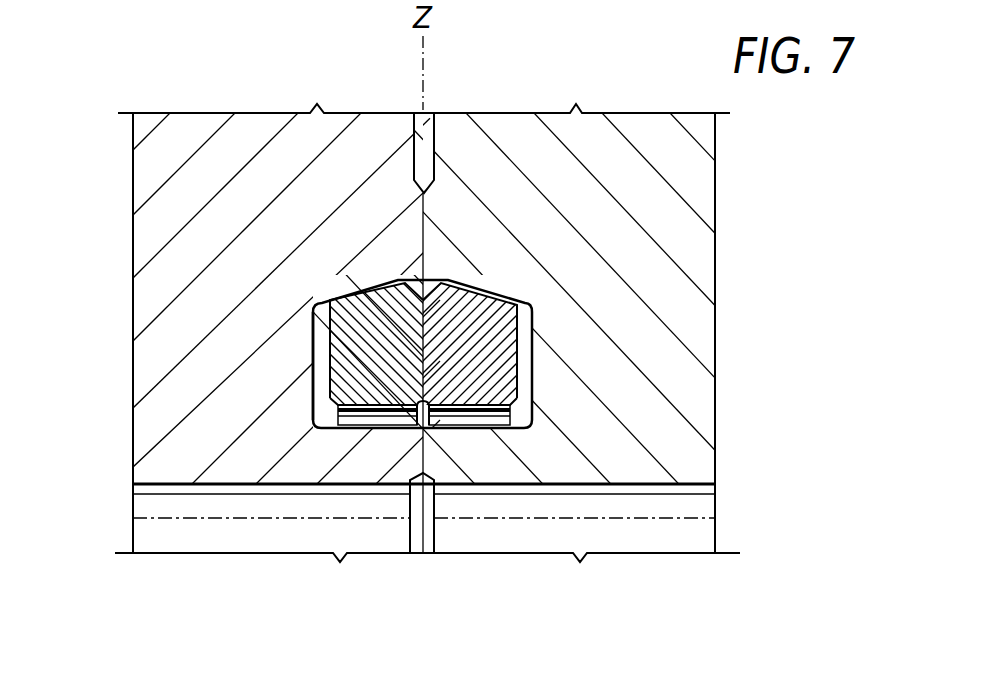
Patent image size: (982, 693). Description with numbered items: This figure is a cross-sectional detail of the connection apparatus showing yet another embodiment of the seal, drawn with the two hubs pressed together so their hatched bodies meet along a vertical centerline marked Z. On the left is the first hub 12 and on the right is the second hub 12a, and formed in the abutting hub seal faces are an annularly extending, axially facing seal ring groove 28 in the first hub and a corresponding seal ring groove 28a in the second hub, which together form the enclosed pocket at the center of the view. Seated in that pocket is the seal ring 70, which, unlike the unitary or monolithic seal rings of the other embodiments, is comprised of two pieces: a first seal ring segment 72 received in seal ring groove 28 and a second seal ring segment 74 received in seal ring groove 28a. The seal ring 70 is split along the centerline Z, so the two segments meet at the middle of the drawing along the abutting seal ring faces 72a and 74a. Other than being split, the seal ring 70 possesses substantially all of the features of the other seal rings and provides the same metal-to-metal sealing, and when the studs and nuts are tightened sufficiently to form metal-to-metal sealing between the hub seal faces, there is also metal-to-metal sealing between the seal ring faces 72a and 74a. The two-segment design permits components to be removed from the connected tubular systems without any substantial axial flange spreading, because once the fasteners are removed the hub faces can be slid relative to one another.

The first hub 12 is at (695, 188).
The second hub 12a is at (140, 183).
The seal ring groove 28 is at (528, 362).
The seal ring groove 28a is at (318, 360).
The seal ring 70 is at (487, 272).
The first seal ring segment 72 is at (515, 396).
The seal ring face 72a is at (418, 357).
The second seal ring segment 74 is at (368, 388).
The seal ring face 74a is at (422, 312).